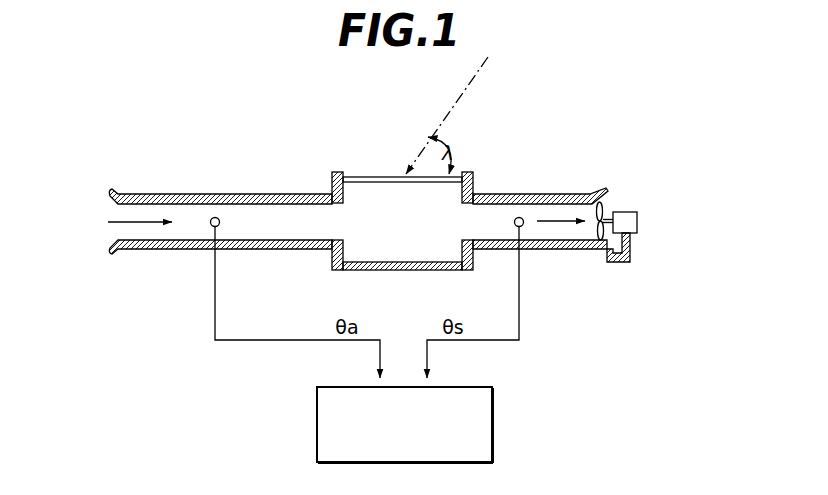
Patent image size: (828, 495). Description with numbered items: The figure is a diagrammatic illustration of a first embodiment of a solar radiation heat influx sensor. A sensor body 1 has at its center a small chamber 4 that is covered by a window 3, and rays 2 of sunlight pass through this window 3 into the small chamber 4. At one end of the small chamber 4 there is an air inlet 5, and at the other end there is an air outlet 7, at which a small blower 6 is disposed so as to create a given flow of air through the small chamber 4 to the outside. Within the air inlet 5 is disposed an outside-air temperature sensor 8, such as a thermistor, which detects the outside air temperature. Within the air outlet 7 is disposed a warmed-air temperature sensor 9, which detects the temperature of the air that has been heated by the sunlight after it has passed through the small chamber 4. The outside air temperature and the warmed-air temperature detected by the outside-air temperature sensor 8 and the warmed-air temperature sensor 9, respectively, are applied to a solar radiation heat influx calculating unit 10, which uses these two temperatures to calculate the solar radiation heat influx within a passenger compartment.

The sensor body 1 is at (316, 179).
The rays of sunlight 2 is at (484, 68).
The window 3 is at (365, 175).
The small chamber 4 is at (397, 228).
The air inlet 5 is at (187, 218).
The small blower 6 is at (613, 207).
The air outlet 7 is at (550, 215).
The outside-air temperature sensor 8 is at (209, 227).
The warmed-air temperature sensor 9 is at (523, 225).
The solar radiation heat influx calculating unit 10 is at (493, 423).